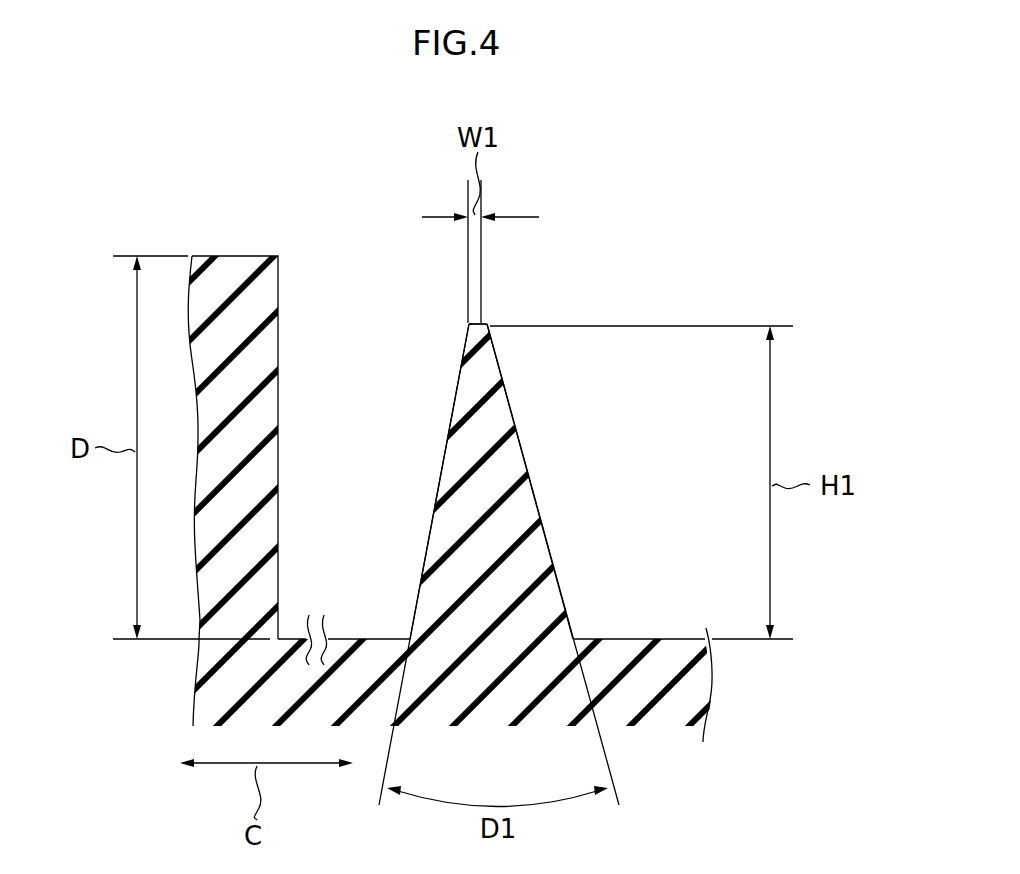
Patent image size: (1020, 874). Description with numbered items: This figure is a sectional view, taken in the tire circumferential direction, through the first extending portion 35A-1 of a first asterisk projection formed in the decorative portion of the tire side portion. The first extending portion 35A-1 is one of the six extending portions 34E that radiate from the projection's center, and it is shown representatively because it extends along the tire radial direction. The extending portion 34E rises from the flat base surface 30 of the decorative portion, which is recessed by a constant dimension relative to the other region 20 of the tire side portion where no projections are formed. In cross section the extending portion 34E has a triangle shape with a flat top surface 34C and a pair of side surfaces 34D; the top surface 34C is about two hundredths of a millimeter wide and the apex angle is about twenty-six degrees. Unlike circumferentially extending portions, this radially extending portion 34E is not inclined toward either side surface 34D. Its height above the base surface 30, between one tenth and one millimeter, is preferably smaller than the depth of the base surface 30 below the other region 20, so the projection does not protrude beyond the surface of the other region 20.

The other region 20 is at (249, 256).
The base surface 30 is at (358, 639).
The top surface 34C is at (478, 322).
The side surfaces 34D is at (443, 455).
The extending portion 34E is at (456, 314).
The first extending portion 35A-1 is at (546, 537).